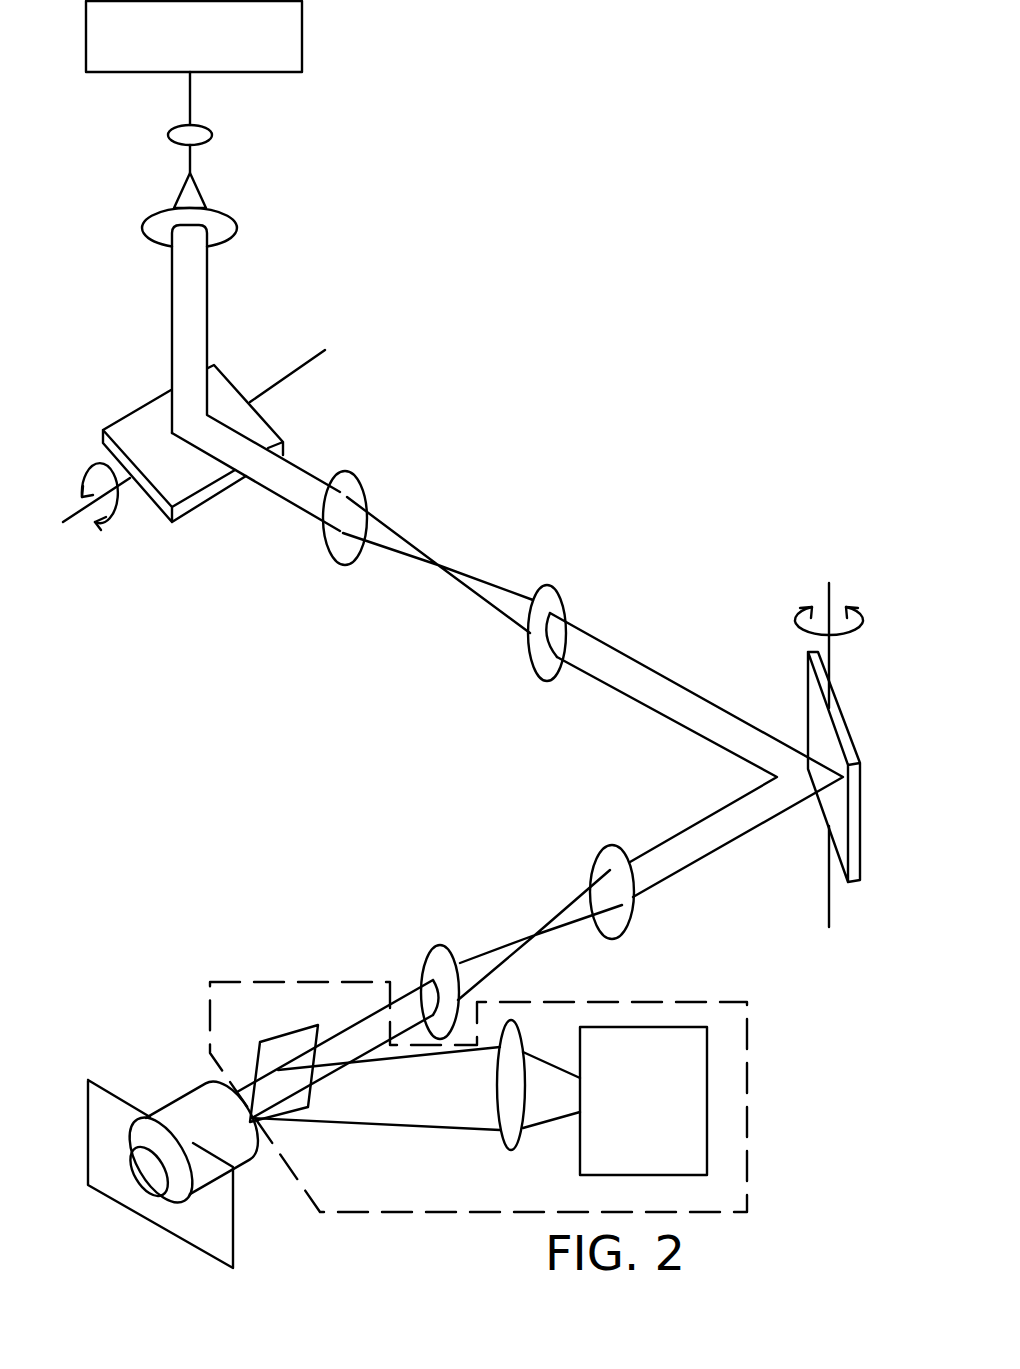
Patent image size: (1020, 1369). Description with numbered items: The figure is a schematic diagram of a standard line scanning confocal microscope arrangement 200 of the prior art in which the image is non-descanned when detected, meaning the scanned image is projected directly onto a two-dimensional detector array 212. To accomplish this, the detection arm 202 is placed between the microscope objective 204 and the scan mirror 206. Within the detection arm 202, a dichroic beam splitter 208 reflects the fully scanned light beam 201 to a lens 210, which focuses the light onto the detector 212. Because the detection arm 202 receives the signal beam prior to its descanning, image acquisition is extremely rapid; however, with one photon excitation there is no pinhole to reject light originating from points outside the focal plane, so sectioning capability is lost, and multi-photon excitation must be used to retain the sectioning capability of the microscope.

The optical scanning system 200 is at (745, 592).
The fully scanned light beam 201 is at (297, 463).
The detection arm 202 is at (748, 1110).
The microscope objective 204 is at (197, 1102).
The scan mirror 206 is at (808, 733).
The dichroic beam splitter 208 is at (273, 1027).
The lens 210 is at (500, 1140).
The two-dimensional detector array 212 is at (702, 1130).